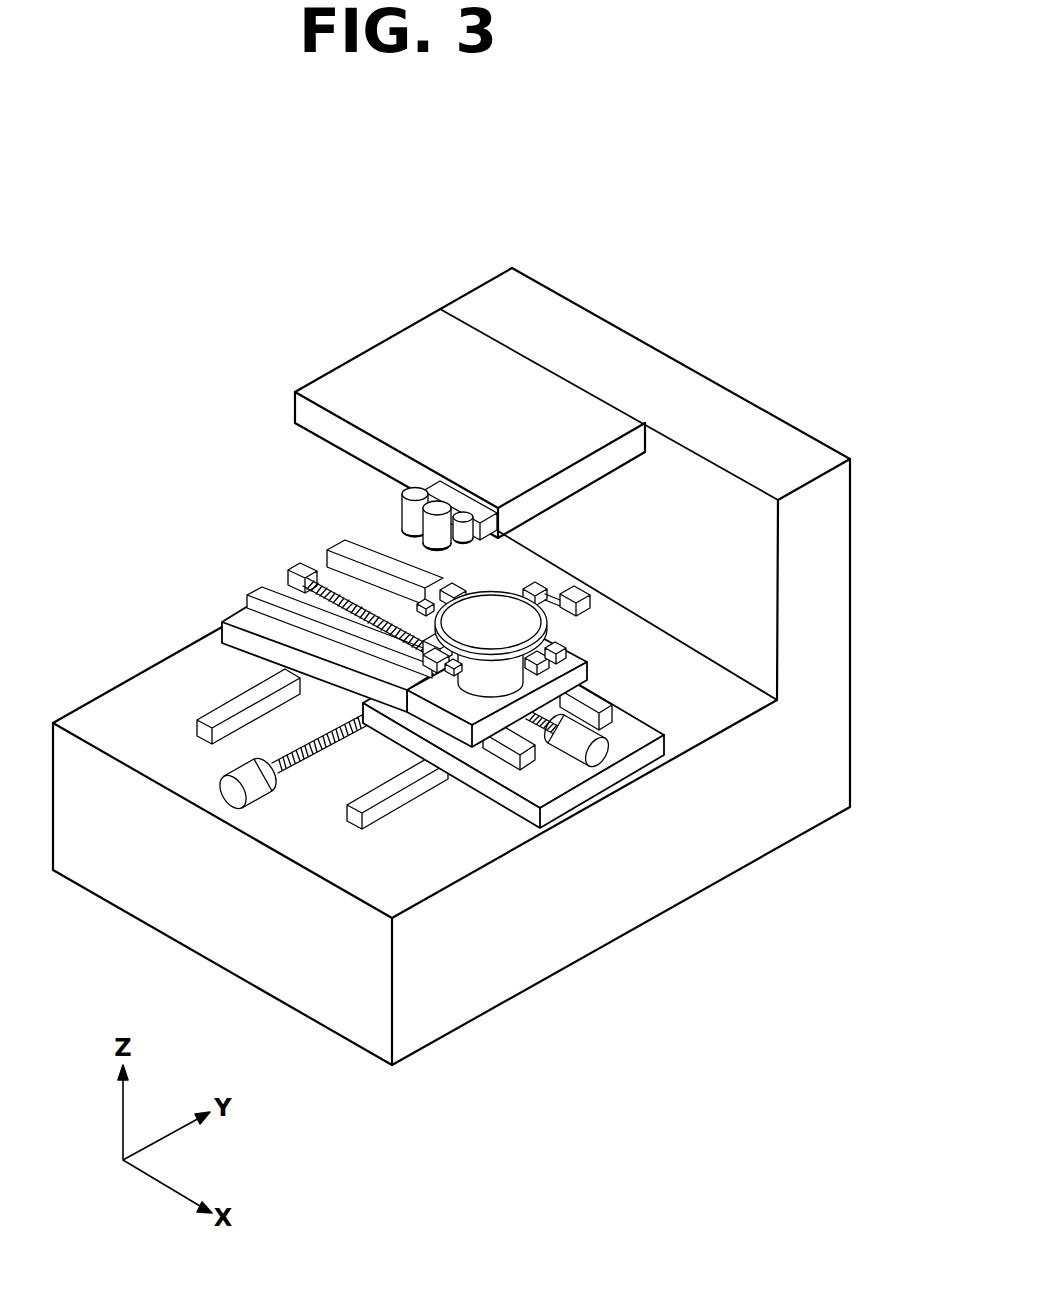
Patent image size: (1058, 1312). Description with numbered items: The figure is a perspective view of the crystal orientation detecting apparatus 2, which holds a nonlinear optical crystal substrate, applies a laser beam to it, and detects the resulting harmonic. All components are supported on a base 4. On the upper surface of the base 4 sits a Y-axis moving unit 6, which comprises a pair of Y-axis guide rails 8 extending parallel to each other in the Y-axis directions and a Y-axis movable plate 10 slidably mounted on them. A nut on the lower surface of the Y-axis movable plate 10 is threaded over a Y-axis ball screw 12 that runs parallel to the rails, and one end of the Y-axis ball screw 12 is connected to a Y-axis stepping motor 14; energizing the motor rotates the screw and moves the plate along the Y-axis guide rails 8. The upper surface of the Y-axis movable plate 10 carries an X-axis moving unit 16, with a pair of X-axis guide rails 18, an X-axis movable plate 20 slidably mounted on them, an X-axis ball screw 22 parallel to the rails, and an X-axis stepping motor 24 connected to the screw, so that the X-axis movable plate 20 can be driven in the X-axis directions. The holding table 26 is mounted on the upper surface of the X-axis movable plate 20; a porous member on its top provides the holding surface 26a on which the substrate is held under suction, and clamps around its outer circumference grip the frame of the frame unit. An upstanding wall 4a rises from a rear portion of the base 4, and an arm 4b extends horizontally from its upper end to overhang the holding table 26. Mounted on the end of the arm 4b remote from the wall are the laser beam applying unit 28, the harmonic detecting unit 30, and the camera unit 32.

The crystal orientation detecting apparatus 2 is at (451, 638).
The base 4 is at (451, 656).
The upstanding wall 4a is at (668, 380).
The arm 4b is at (400, 345).
The Y-axis moving unit 6 is at (367, 807).
The Y-axis guide rails 8 is at (212, 713).
The Y-axis movable plate 10 is at (522, 806).
The Y-axis ball screw 12 is at (287, 744).
The Y-axis stepping motor 14 is at (232, 790).
The X-axis moving unit 16 is at (624, 728).
The X-axis guide rails 18 is at (343, 551).
The X-axis movable plate 20 is at (465, 735).
The X-axis ball screw 22 is at (323, 571).
The X-axis stepping motor 24 is at (600, 752).
The holding table 26 is at (579, 598).
The holding surface 26a is at (492, 618).
The laser beam applying unit 28 is at (437, 506).
The harmonic detecting unit 30 is at (415, 492).
The camera unit 32 is at (463, 515).